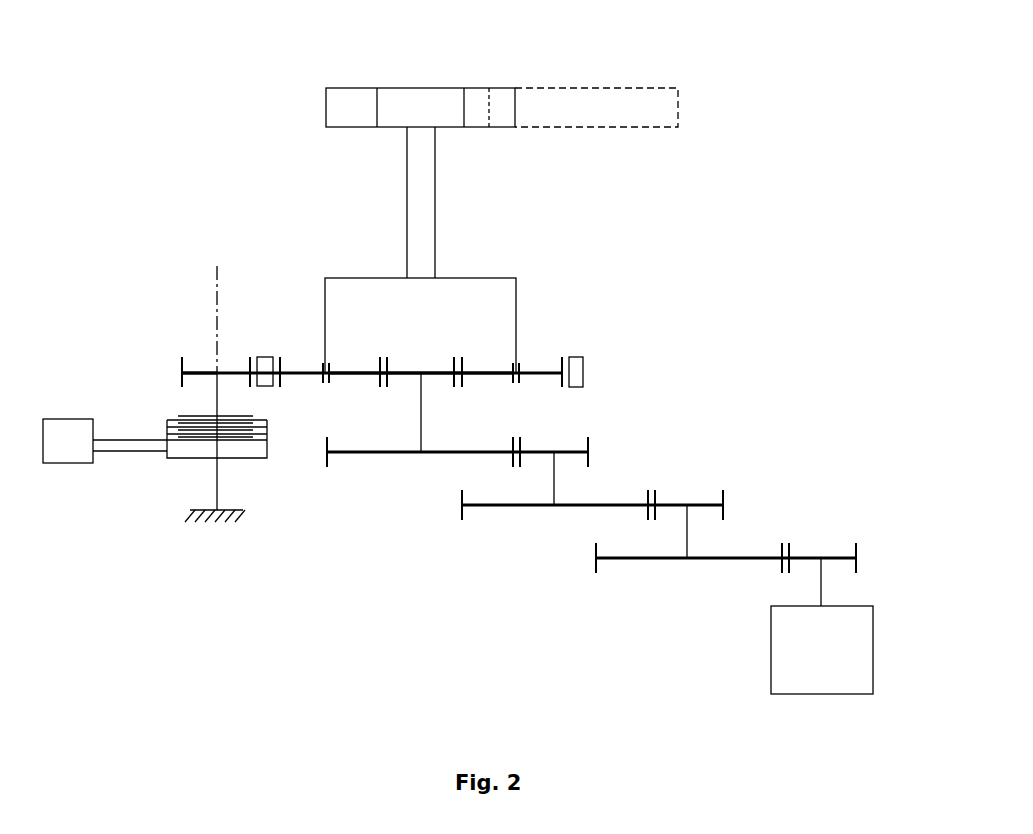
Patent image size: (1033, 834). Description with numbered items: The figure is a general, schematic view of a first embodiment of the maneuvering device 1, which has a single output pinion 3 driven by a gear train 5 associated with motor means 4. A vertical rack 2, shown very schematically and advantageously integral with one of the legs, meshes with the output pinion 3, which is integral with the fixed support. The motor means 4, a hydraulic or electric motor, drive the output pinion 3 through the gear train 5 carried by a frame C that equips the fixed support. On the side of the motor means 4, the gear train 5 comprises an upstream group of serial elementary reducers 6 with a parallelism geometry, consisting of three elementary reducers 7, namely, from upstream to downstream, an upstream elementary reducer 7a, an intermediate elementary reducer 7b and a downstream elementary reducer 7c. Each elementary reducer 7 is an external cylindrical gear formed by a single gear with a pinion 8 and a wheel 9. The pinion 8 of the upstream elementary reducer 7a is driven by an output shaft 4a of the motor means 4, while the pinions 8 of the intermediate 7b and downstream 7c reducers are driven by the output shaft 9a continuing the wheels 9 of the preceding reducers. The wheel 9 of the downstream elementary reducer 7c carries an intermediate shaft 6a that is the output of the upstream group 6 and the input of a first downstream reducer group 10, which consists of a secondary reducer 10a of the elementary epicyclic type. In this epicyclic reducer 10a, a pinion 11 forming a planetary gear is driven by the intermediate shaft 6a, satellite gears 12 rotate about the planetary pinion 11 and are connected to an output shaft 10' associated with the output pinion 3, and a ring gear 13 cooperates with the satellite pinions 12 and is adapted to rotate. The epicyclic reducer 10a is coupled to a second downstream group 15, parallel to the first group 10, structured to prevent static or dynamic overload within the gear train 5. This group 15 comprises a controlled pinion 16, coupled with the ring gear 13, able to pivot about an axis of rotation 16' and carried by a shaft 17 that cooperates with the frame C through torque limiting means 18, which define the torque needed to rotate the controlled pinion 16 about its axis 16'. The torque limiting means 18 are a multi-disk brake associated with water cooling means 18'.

The maneuvering device 1 is at (548, 630).
The vertical rack 2 is at (565, 105).
The output pinion 3 is at (415, 100).
The motor means 4 is at (782, 645).
The output shaft 4a is at (821, 581).
The gear train 5 is at (495, 583).
The upstream group of serial elementary reducers 6 is at (750, 456).
The intermediate shaft 6a is at (422, 393).
The elementary reducers 7 is at (598, 437).
The upstream elementary reducer 7a is at (860, 559).
The intermediate elementary reducer 7b is at (735, 507).
The downstream elementary reducer 7c is at (598, 455).
The pinion 8 is at (540, 450).
The wheel 9 is at (480, 507).
The output shaft 9a is at (554, 478).
The first downstream reducer group 10 is at (432, 334).
The secondary reducer 10a is at (565, 340).
The output shaft 10' is at (387, 202).
The pinion 11 is at (402, 368).
The satellite gears 12 is at (293, 370).
The ring gear 13 is at (268, 357).
The second downstream group 15 is at (193, 338).
The controlled pinion 16 is at (173, 347).
The axis of rotation 16' is at (197, 299).
The shaft 17 is at (217, 395).
The torque limiting means 18 is at (191, 469).
The water cooling means 18' is at (105, 441).
The frame C is at (215, 518).